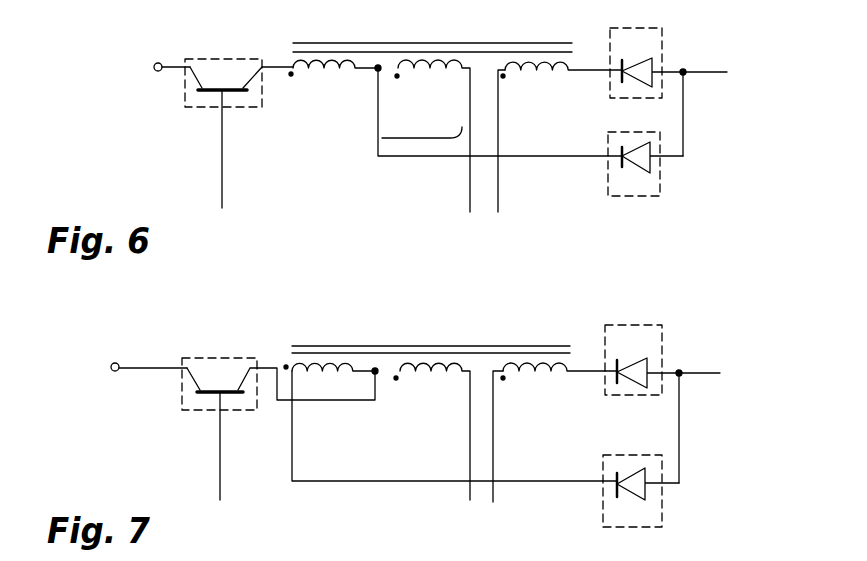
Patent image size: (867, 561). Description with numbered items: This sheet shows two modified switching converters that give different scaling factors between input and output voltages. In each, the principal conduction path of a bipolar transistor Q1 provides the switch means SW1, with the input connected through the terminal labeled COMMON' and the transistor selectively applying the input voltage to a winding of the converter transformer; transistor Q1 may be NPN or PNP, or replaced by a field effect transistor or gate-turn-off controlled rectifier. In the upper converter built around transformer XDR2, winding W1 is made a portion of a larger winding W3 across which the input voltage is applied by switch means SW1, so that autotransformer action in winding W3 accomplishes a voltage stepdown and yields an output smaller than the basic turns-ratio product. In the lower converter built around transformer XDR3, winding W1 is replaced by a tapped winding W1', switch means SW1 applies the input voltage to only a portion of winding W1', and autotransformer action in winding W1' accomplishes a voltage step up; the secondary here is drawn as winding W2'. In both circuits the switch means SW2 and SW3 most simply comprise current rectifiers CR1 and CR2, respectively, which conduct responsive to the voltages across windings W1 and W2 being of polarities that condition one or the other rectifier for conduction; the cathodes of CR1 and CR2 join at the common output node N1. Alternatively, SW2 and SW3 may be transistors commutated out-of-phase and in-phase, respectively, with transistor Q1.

In FIG. 6, the common terminal COMMON' is at (141, 59).
In FIG. 7, the common terminal COMMON' is at (121, 358).
In FIG. 6, the switch means SW1 is at (241, 56).
In FIG. 7, the switch means SW1 is at (238, 357).
In FIG. 6, the transistor Q1 is at (241, 137).
In FIG. 7, the transistor Q1 is at (281, 434).
In FIG. 6, the transformer XDR2 is at (450, 37).
In FIG. 7, the transformer XDR3 is at (465, 334).
In FIG. 6, the winding W1 is at (426, 136).
In FIG. 6, the winding W2 is at (560, 137).
In FIG. 6, the larger winding W3 is at (370, 127).
In FIG. 7, the tapped winding W1' is at (450, 431).
In FIG. 7, the winding W2' is at (555, 432).
In FIG. 6, the current rectifier CR1 is at (650, 167).
In FIG. 7, the current rectifier CR1 is at (647, 495).
In FIG. 6, the current rectifier CR2 is at (674, 61).
In FIG. 7, the current rectifier CR2 is at (668, 363).
In FIG. 6, the node N1 is at (684, 75).
In FIG. 7, the node N1 is at (680, 376).
In FIG. 6, the switch means SW3 is at (667, 18).
In FIG. 7, the switch means SW3 is at (669, 341).
In FIG. 6, the switch means SW2 is at (660, 196).
In FIG. 7, the switch means SW2 is at (661, 508).